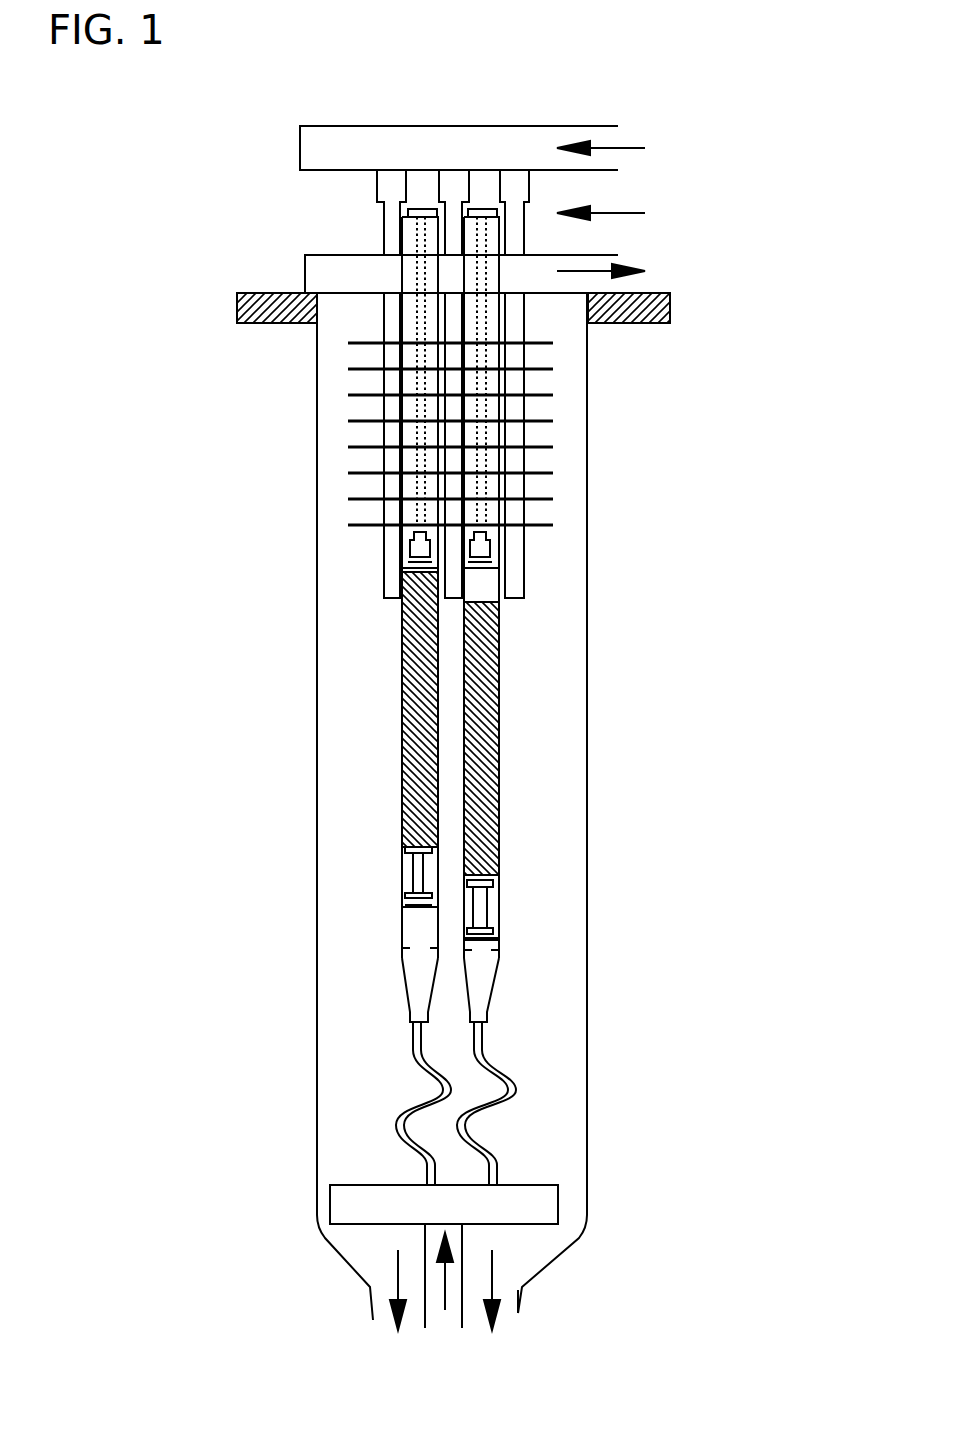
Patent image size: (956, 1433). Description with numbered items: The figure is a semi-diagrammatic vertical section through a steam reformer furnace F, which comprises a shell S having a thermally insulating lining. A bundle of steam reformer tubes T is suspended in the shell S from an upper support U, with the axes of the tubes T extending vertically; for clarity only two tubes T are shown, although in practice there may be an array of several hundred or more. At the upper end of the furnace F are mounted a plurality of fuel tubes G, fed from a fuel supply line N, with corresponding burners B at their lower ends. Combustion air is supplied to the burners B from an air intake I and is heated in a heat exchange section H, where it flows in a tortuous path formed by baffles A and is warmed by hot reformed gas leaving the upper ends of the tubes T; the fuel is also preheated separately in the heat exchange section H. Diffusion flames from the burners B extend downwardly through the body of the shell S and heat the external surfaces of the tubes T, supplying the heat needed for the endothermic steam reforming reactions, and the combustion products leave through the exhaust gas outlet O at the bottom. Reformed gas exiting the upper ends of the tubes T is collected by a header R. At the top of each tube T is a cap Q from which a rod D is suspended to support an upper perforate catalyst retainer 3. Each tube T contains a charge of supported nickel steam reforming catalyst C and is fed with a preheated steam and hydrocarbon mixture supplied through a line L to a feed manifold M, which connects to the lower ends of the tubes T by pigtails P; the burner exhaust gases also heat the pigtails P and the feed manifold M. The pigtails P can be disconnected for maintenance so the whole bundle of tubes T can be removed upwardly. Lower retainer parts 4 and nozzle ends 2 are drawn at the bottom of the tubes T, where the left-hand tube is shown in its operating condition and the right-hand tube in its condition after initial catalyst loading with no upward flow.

The fuel supply line N is at (362, 126).
The cap Q is at (480, 207).
The air intake I is at (580, 188).
The header R is at (575, 262).
The upper support U is at (268, 293).
The rod D is at (477, 330).
The baffles A is at (548, 447).
The heat exchange section H is at (563, 447).
The fuel tubes G is at (452, 463).
The steam reformer furnace F is at (302, 516).
The upper perforate catalyst retainer 3 is at (413, 543).
The burners B is at (443, 598).
The supported nickel steam reforming catalyst C is at (500, 728).
The steam reformer tubes T is at (402, 792).
The shell S is at (587, 783).
The lower valve 4 is at (407, 882).
The nozzle 2 is at (402, 958).
The pigtails P is at (520, 1080).
The feed manifold M is at (522, 1180).
The line L is at (423, 1238).
The exhaust gas outlet O is at (506, 1297).